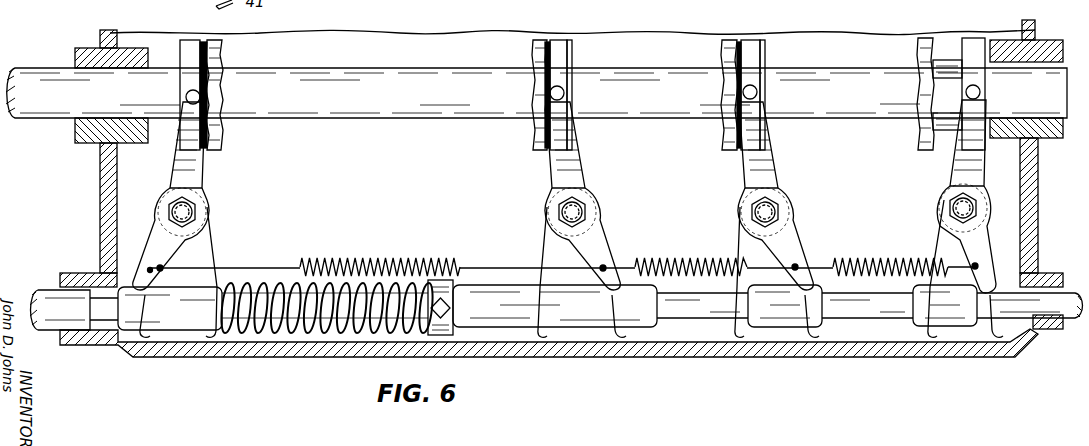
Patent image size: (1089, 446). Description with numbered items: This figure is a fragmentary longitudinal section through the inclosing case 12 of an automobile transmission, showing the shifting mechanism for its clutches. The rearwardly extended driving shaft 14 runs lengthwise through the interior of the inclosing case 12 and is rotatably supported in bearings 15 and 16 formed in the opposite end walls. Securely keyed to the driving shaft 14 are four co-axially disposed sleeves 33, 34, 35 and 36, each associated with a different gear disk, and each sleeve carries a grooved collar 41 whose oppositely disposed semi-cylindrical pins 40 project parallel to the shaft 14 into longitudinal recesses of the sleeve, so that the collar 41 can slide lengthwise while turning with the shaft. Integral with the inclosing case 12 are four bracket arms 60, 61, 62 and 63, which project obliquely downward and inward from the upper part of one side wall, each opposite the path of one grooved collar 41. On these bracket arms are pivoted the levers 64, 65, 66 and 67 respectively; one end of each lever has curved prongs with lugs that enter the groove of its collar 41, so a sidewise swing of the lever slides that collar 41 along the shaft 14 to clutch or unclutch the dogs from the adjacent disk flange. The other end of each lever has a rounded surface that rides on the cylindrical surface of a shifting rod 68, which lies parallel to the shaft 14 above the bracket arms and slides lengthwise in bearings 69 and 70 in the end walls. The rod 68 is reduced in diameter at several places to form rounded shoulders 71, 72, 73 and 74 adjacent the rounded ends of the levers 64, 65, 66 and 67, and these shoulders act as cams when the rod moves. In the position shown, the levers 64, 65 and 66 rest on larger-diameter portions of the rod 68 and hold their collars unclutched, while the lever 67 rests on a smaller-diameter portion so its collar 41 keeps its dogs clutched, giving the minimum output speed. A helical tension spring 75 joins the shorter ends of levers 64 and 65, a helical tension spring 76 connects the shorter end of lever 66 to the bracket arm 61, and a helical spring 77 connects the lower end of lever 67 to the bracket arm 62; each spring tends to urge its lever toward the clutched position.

The inclosing case 12 is at (643, 358).
The driving shaft 14 is at (840, 75).
The bearing 15 is at (78, 63).
The bearing 16 is at (1043, 58).
The sleeve 33 is at (222, 58).
The sleeve 34 is at (531, 52).
The sleeve 35 is at (721, 52).
The sleeve 36 is at (918, 52).
The semi-cylindrical pins 40 is at (946, 64).
The grooved collar 41 is at (192, 52).
The bracket arm 60 is at (205, 250).
The bracket arm 61 is at (553, 247).
The bracket arm 62 is at (747, 237).
The bracket arm 63 is at (942, 233).
The lever 64 is at (197, 183).
The lever 65 is at (580, 175).
The lever 66 is at (777, 173).
The lever 67 is at (980, 177).
The shifting rod 68 is at (42, 288).
The bearing 69 is at (78, 277).
The bearing 70 is at (1048, 277).
The rounded shoulder 71 is at (122, 287).
The rounded shoulder 72 is at (656, 288).
The rounded shoulder 73 is at (821, 288).
The rounded shoulder 74 is at (977, 322).
The helical tension spring 75 is at (412, 258).
The helical tension spring 76 is at (670, 256).
The helical spring 77 is at (885, 254).